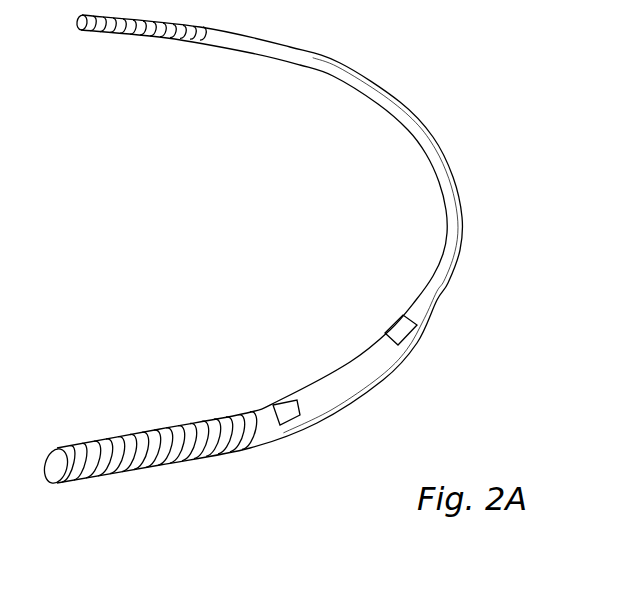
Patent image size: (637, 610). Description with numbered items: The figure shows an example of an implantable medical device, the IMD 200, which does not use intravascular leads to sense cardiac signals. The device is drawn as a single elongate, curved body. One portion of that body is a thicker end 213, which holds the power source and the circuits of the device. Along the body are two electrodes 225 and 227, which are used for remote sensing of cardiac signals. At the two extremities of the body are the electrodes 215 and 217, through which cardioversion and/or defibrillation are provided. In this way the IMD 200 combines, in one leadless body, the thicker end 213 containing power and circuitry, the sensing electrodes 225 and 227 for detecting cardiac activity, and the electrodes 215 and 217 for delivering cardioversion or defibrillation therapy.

The IMD 200 is at (281, 266).
The thicker end 213 is at (244, 401).
The electrode 215 is at (145, 34).
The electrode 217 is at (156, 462).
The electrode 225 is at (290, 414).
The electrode 227 is at (405, 331).